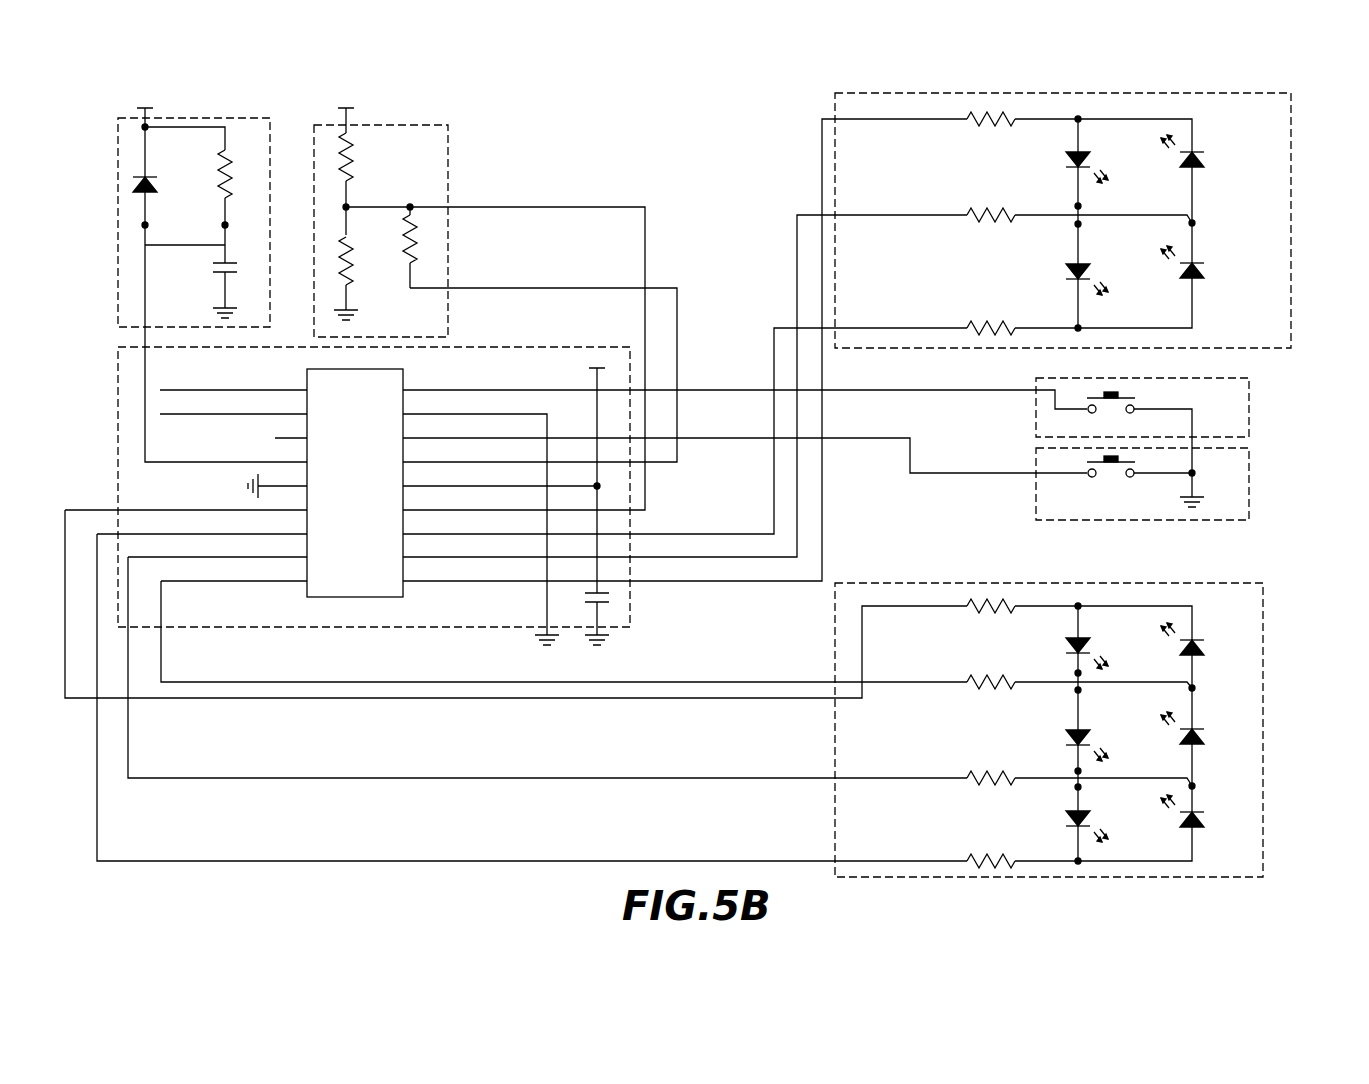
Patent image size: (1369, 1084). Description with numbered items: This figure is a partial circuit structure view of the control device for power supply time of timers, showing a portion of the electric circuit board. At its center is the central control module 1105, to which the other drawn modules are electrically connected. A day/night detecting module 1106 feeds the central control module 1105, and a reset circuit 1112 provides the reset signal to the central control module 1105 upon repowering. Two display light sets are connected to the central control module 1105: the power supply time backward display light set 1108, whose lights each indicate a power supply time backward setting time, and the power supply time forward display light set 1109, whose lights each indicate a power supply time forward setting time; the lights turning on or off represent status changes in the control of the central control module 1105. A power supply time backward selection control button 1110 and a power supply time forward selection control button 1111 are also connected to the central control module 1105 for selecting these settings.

The central control module 1105 is at (118, 398).
The day/night detecting module 1106 is at (448, 178).
The power supply time backward display light set 1108 is at (1018, 583).
The power supply time forward display light set 1109 is at (1291, 185).
The power supply time backward selection control button 1110 is at (1249, 478).
The power supply time forward selection control button 1111 is at (1249, 405).
The reset circuit 1112 is at (118, 178).